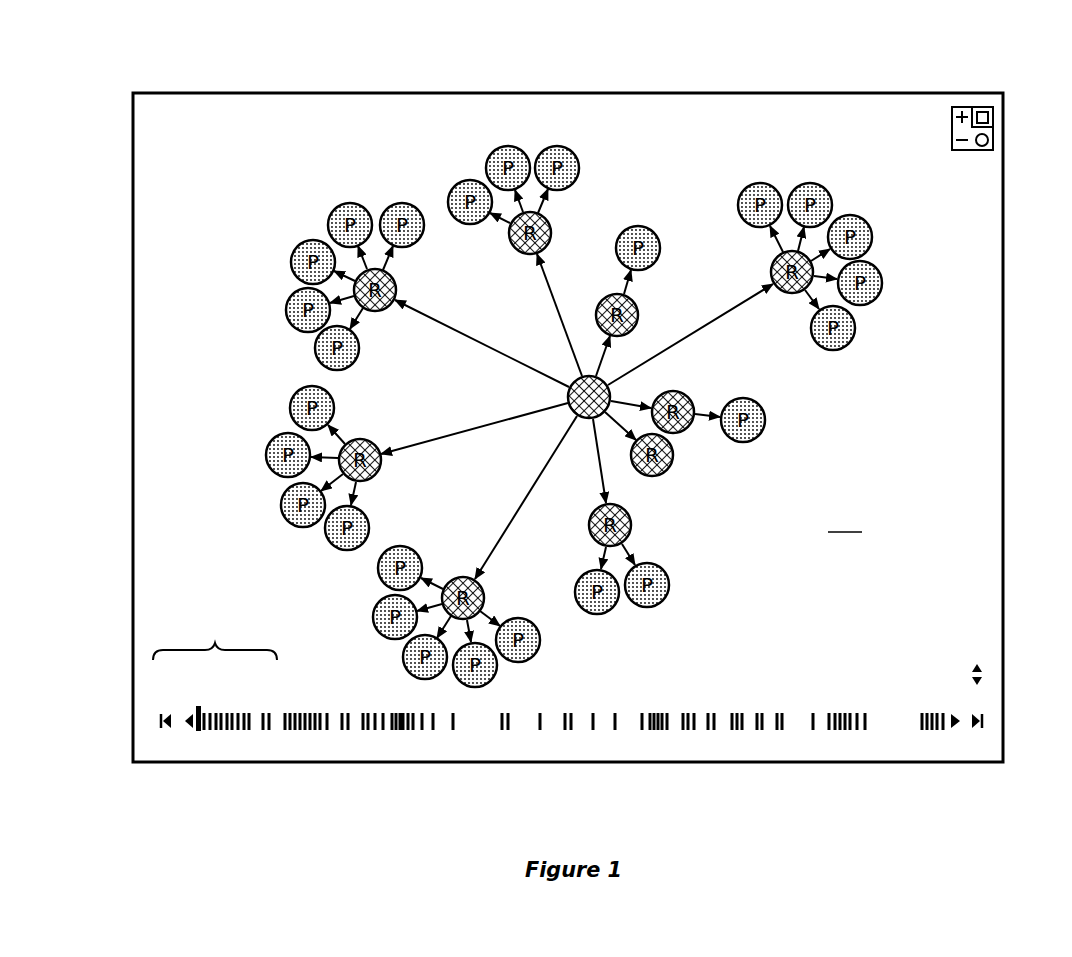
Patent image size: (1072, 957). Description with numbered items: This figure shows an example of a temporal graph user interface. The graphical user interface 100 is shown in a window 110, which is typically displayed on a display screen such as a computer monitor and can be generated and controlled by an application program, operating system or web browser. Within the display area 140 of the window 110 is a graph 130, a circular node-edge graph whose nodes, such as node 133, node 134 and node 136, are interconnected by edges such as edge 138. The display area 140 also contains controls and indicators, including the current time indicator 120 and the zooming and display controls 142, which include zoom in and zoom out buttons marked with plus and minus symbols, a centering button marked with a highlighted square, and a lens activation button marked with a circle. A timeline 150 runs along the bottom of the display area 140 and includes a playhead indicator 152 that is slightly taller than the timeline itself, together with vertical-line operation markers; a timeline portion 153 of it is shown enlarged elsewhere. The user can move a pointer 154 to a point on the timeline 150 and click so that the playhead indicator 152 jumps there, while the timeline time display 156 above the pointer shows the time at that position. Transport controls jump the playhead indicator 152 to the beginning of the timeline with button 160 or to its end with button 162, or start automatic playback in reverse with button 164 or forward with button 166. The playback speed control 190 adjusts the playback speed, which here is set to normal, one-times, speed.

The graphical user interface 100 is at (995, 66).
The window 110 is at (775, 92).
The current time indicator 120 is at (668, 130).
The graph 130 is at (893, 218).
The user node (U) 133 is at (622, 386).
The node 134 is at (692, 400).
The node 136 is at (766, 420).
The edge 138 is at (722, 312).
The display area 140 is at (845, 522).
The zooming and display controls 142 is at (988, 160).
The timeline 150 is at (784, 733).
The playhead indicator 152 is at (205, 700).
The timeline portion 153 is at (215, 640).
The pointer 154 is at (682, 733).
The timeline time display 156 is at (745, 676).
The beginning transport button 160 is at (160, 730).
The end transport button 162 is at (980, 731).
The reverse playback button 164 is at (188, 733).
The forward playback button 166 is at (957, 733).
The playback speed control 190 is at (985, 650).